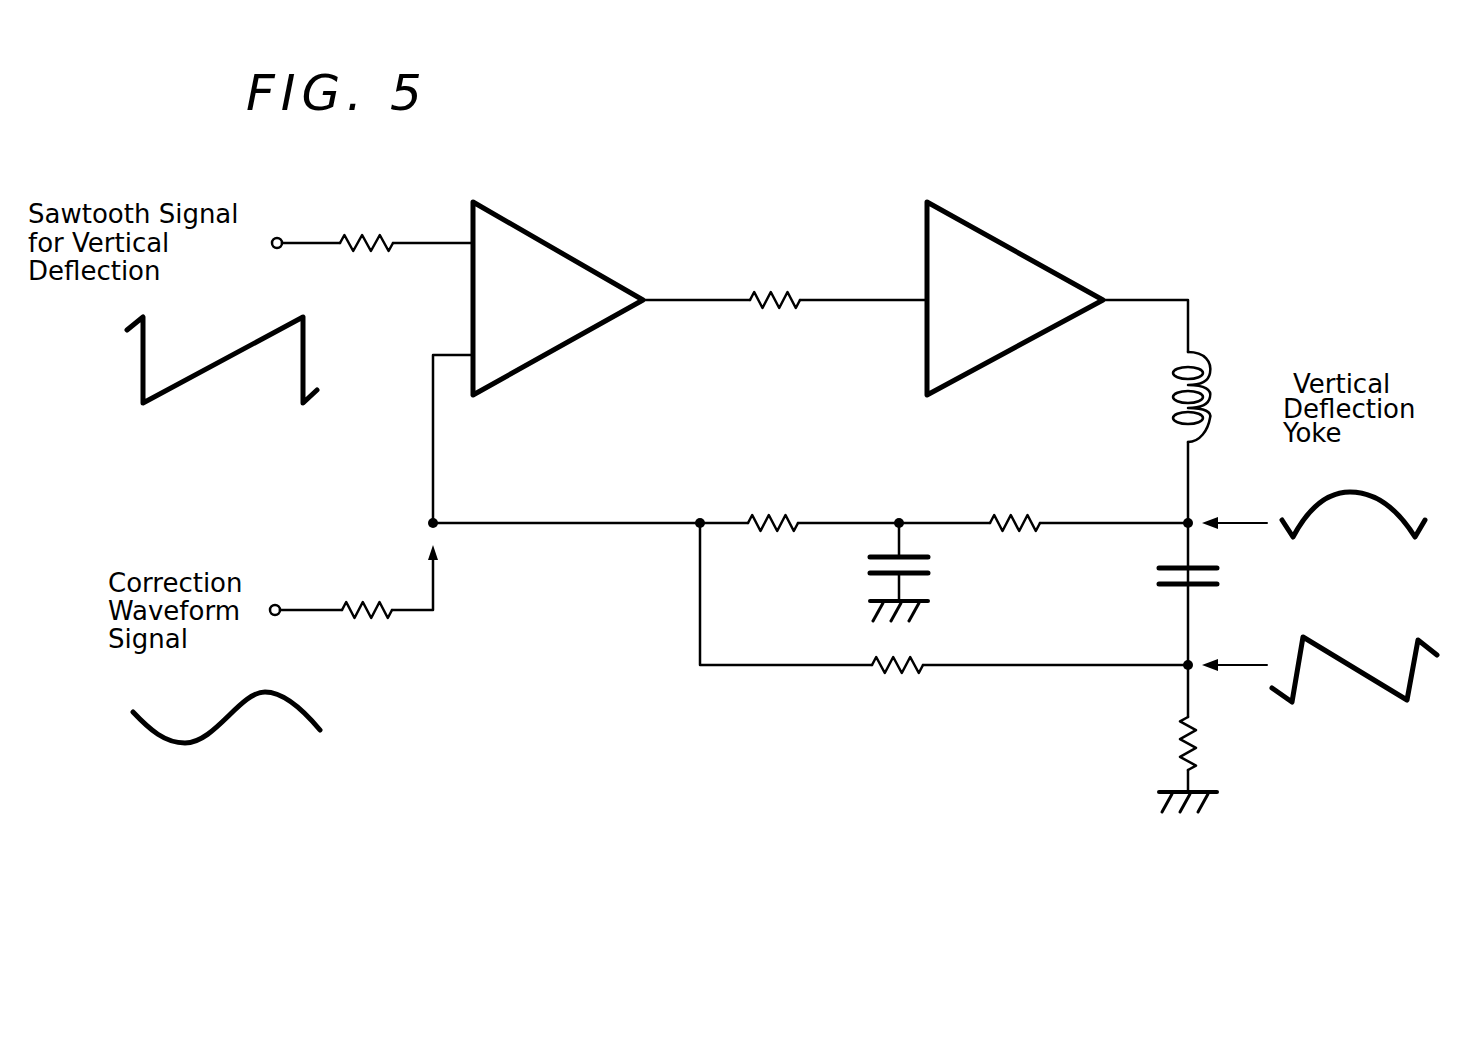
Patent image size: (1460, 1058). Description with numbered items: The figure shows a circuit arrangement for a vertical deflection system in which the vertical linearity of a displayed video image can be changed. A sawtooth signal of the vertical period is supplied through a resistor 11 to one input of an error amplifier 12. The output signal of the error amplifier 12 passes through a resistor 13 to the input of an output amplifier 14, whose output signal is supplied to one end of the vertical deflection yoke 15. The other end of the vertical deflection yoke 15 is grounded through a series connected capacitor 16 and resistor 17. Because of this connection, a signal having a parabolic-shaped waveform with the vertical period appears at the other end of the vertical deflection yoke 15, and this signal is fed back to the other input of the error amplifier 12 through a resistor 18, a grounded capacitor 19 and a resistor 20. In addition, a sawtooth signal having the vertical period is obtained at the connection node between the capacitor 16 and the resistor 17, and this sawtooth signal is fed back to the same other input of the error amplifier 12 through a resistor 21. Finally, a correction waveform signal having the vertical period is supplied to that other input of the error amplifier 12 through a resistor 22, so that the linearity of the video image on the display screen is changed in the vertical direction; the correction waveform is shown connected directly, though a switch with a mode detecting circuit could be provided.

The resistor 11 is at (378, 232).
The error amplifier 12 is at (523, 223).
The resistor 13 is at (778, 286).
The output amplifier 14 is at (970, 222).
The vertical deflection yoke 15 is at (1218, 408).
The capacitor 16 is at (1222, 572).
The resistor 17 is at (1200, 735).
The resistor 18 is at (1010, 512).
The capacitor 19 is at (932, 567).
The resistor 20 is at (778, 512).
The resistor 21 is at (900, 675).
The resistor 22 is at (365, 596).